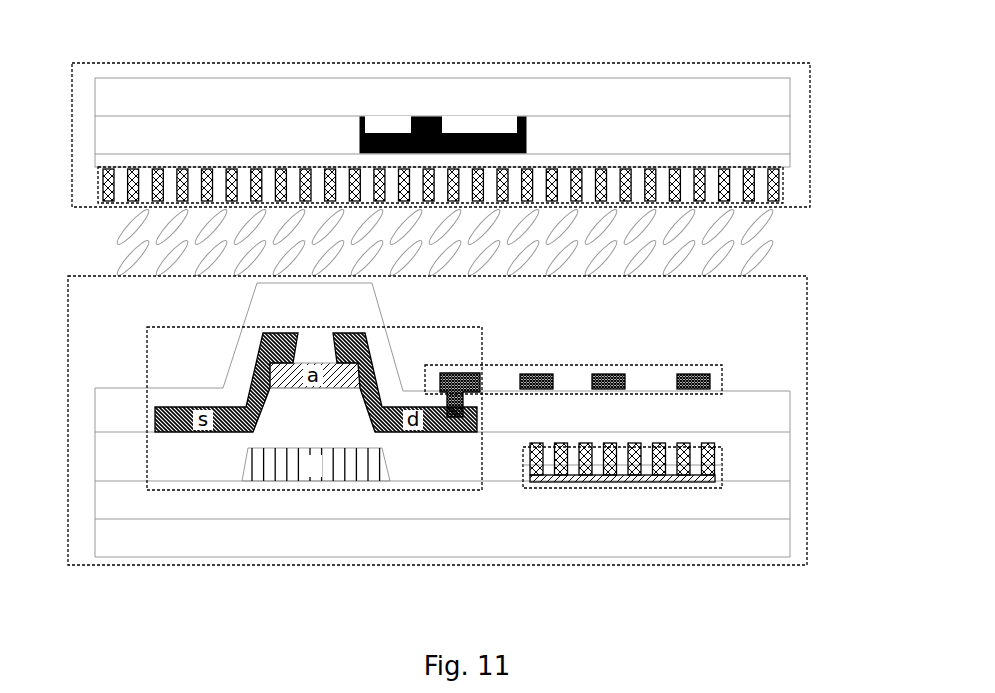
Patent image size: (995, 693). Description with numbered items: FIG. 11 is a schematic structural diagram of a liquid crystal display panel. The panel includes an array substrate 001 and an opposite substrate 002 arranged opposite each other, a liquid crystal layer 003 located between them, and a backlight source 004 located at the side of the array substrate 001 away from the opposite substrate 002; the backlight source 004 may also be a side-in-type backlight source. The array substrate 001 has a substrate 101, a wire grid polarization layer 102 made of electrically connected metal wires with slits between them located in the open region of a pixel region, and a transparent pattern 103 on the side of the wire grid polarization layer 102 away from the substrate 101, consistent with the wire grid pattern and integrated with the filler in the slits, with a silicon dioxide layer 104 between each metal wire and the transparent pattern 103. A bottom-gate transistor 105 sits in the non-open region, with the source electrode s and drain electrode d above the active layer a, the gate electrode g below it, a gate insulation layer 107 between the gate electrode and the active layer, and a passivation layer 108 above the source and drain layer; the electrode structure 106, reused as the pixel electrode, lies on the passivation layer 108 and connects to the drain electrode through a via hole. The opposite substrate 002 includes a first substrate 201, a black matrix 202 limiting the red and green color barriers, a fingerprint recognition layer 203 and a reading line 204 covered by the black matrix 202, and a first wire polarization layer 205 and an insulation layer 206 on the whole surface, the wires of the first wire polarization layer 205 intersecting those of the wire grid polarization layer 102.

The array substrate 001 is at (68, 360).
The opposite substrate 002 is at (72, 138).
The liquid crystal layer 003 is at (770, 235).
The backlight source 004 is at (790, 537).
The substrate 101 is at (790, 503).
The wire grid polarization layer 102 is at (722, 476).
The transparent pattern 103 is at (713, 447).
The silicon dioxide layer 104 is at (523, 452).
The transistor 105 is at (313, 490).
The electrode structure 106 is at (722, 378).
The gate insulation layer 107 is at (95, 455).
The passivation layer 108 is at (95, 415).
The first substrate 201 is at (790, 92).
The black matrix 202 is at (430, 116).
The fingerprint recognition layer 203 is at (480, 116).
The reading line 204 is at (388, 116).
The first wire polarization layer 205 is at (783, 184).
The insulation layer 206 is at (790, 158).